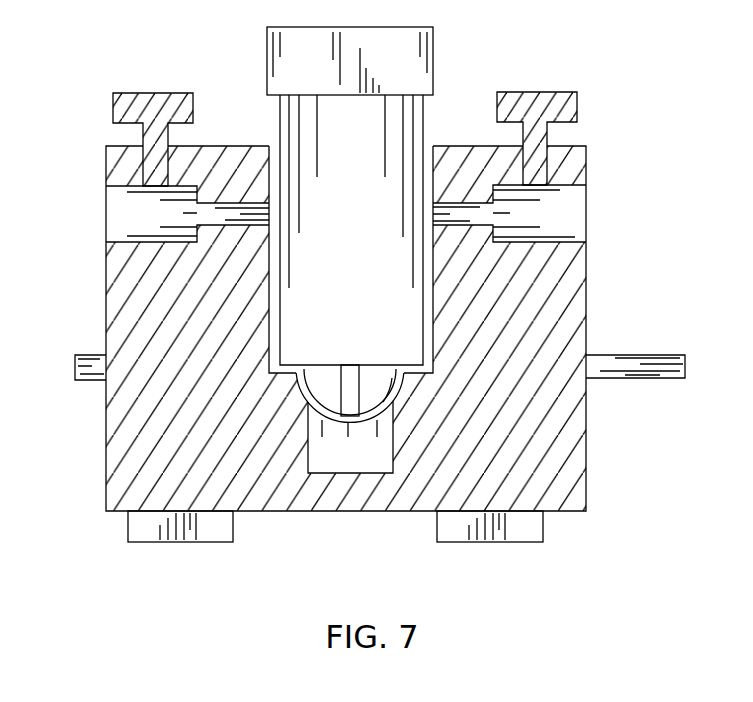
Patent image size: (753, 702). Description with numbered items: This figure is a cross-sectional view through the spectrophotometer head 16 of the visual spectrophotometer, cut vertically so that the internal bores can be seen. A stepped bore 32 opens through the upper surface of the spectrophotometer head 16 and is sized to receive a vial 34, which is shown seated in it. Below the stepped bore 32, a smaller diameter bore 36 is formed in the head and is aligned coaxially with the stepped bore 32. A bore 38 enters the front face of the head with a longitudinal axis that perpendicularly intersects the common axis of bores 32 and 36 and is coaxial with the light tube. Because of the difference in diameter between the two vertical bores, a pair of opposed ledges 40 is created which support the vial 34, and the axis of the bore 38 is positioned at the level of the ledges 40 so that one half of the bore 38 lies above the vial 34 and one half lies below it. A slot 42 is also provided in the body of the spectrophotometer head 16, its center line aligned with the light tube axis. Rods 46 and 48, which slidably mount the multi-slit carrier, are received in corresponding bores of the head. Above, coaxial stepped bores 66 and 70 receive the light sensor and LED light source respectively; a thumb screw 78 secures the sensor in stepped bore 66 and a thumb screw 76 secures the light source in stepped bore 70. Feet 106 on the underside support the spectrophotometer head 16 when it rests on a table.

The spectrophotometer head 16 is at (76, 281).
The stepped bore 32 is at (423, 263).
The vial 34 is at (412, 128).
The smaller diameter bore 36 is at (392, 448).
The bore 38 is at (306, 405).
The opposed ledges 40 is at (313, 395).
The slot 42 is at (352, 397).
The rod 46 is at (684, 359).
The rod 48 is at (76, 372).
The stepped bore 66 is at (122, 242).
The stepped bore 70 is at (568, 186).
The thumb screw 76 is at (563, 106).
The thumb screw 78 is at (121, 112).
The feet 106 is at (195, 542).